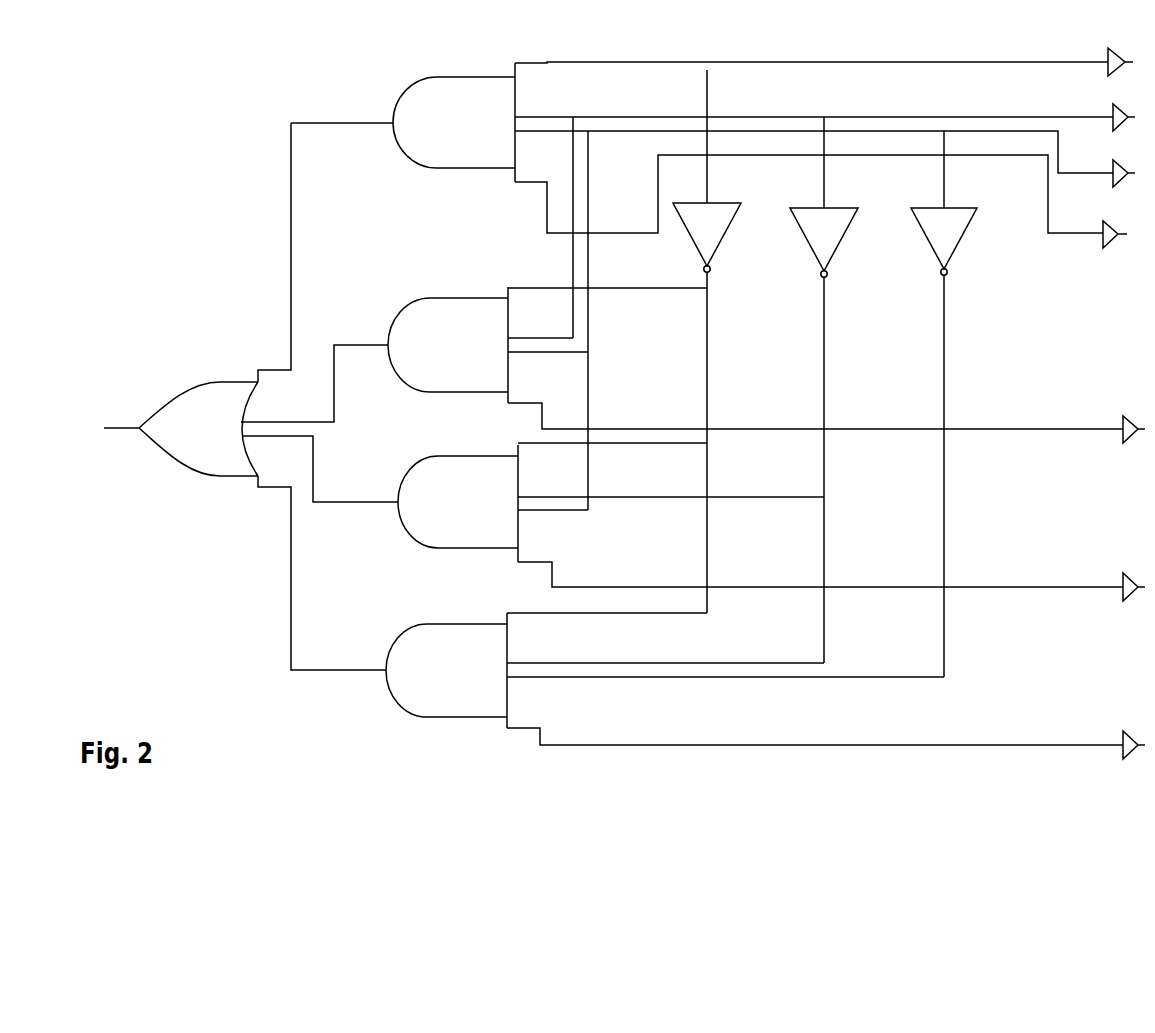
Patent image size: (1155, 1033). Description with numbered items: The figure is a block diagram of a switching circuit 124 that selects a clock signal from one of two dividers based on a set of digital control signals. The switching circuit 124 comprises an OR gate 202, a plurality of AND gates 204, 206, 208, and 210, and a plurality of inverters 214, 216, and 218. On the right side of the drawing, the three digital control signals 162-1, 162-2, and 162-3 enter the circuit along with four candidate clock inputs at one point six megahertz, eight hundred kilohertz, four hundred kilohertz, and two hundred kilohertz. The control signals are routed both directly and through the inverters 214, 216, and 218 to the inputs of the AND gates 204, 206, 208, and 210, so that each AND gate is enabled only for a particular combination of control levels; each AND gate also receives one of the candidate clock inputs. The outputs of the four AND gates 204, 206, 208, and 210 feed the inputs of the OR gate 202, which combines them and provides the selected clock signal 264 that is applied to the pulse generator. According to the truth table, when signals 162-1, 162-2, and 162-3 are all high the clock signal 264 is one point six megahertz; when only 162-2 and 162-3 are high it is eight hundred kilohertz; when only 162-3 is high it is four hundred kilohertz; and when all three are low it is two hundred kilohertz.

The switching circuit 124 is at (87, 37).
The OR gate 202 is at (163, 455).
The AND gate 204 is at (398, 147).
The AND gate 206 is at (408, 385).
The AND gate 208 is at (409, 538).
The AND gate 210 is at (386, 686).
The inverter 214 is at (695, 242).
The inverter 216 is at (807, 245).
The inverter 218 is at (927, 240).
The clock signal 264 is at (137, 426).
The digital control signal 162-1 is at (1073, 63).
The digital control signal 162-2 is at (1073, 118).
The digital control signal 162-3 is at (1078, 174).